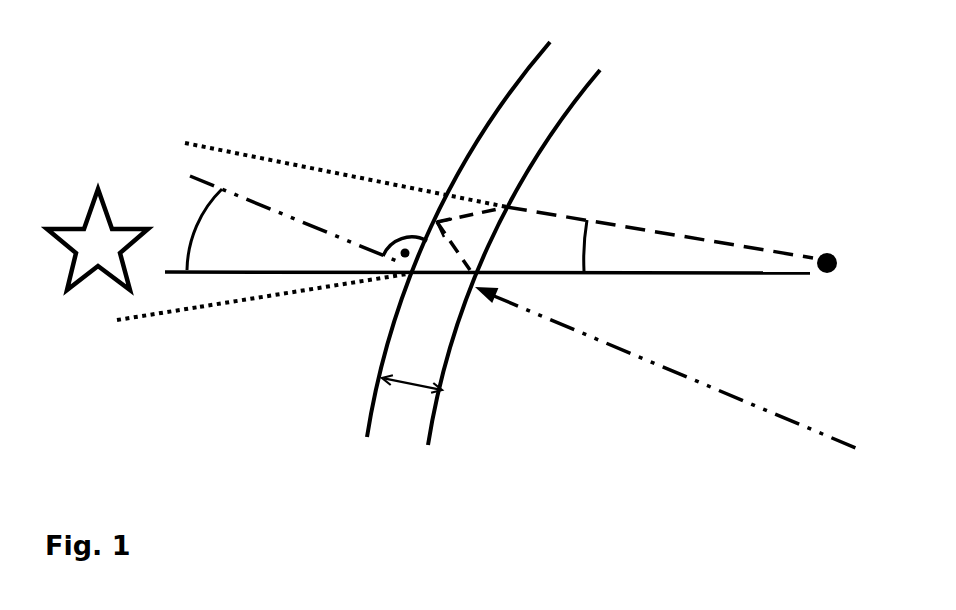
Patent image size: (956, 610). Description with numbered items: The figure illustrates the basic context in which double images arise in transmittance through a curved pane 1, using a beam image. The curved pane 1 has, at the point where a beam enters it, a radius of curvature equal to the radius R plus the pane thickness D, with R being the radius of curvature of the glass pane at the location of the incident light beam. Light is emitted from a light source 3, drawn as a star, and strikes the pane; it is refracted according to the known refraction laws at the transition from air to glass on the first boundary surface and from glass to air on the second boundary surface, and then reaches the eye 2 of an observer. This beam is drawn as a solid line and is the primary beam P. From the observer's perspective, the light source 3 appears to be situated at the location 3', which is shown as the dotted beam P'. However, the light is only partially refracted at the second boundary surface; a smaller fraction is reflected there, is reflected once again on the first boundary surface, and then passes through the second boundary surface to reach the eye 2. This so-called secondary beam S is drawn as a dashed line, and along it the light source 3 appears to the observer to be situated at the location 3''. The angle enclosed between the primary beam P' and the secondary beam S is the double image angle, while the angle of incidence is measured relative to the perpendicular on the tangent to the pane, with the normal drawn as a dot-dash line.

The curved pane 1 is at (354, 407).
The eye 2 is at (839, 232).
The light source 3 is at (97, 239).
The location 3' is at (117, 363).
The location 3'' is at (346, 115).
The primary beam P is at (487, 325).
The beam P' is at (303, 347).
The secondary beam S is at (708, 223).
The radius of curvature R is at (665, 393).
The pane thickness D is at (407, 423).